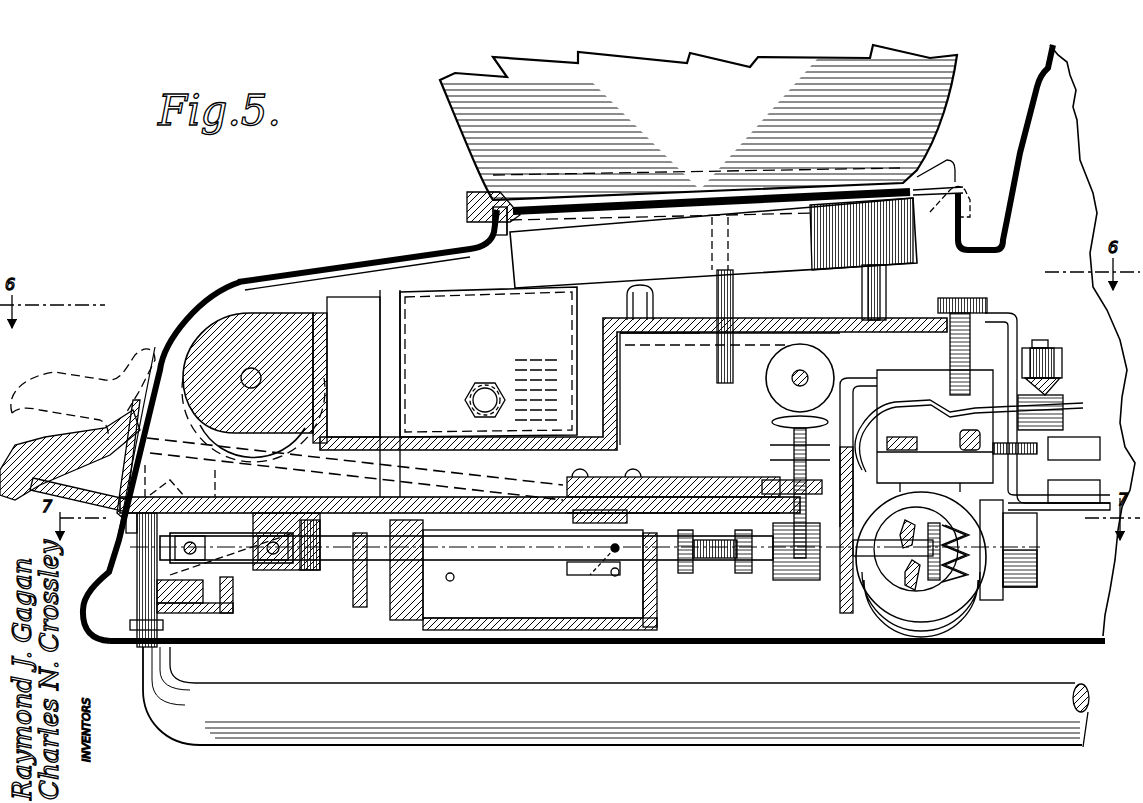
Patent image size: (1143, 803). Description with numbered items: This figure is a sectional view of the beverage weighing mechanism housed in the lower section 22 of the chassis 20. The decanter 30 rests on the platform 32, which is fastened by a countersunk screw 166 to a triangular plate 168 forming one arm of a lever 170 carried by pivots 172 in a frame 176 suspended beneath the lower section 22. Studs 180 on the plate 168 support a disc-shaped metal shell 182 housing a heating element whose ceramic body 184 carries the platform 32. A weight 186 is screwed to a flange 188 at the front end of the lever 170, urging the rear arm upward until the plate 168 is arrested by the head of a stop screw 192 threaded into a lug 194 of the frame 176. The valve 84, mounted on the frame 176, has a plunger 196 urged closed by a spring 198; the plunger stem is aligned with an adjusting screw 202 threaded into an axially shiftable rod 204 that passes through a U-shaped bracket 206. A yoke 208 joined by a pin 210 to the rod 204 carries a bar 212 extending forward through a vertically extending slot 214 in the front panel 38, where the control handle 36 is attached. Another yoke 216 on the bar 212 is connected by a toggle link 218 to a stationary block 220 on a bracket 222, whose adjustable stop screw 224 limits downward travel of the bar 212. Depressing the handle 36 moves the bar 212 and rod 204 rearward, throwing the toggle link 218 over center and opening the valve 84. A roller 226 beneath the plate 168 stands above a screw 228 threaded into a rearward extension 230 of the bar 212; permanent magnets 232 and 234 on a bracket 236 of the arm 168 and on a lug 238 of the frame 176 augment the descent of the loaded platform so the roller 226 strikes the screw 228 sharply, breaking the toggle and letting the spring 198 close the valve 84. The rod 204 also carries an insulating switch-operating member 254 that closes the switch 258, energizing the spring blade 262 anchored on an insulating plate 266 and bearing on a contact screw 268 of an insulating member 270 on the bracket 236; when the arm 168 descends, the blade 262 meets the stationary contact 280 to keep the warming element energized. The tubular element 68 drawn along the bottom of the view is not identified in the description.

The chassis 20 is at (214, 288).
The lower section 22 is at (345, 268).
The decanter 30 is at (440, 95).
The platform 32 is at (465, 196).
The control handle 36 is at (30, 445).
The front panel 38 is at (160, 345).
The tube 68 is at (633, 735).
The valve 84 is at (882, 605).
The countersunk screw 166 is at (735, 293).
The triangular plate 168 is at (682, 333).
The lever 170 is at (620, 428).
The pivots 172 is at (486, 385).
The frame 176 is at (476, 277).
The studs 180 is at (650, 298).
The disc-shaped metal shell 182 is at (713, 243).
The ceramic body 184 is at (545, 235).
The weight 186 is at (276, 310).
The flange 188 is at (338, 385).
The stop screw 192 is at (962, 300).
The horizontally extending lug 194 is at (865, 380).
The plunger 196 is at (940, 580).
The spring 198 is at (950, 590).
The adjusting screw 202 is at (708, 568).
The rod 204 is at (512, 562).
The U-shaped bracket 206 is at (440, 618).
The yoke 208 is at (640, 518).
The pin 210 is at (605, 576).
The bar 212 is at (460, 497).
The vertically extending slot 214 is at (140, 480).
The yoke 216 is at (330, 565).
The toggle link 218 is at (250, 560).
The stationary block 220 is at (180, 617).
The bracket 222 is at (240, 606).
The adjustable stop screw 224 is at (150, 685).
The roller 226 is at (770, 390).
The screw 228 is at (790, 462).
The rearward extension 230 is at (695, 476).
The permanent magnet 232 is at (1074, 448).
The permanent magnet 234 is at (1074, 491).
The bracket 236 is at (1019, 332).
The lug 238 is at (1059, 526).
The switch-operating member 254 is at (358, 610).
The switch 258 is at (1055, 338).
The spring blade 262 is at (984, 425).
The insulating plate 266 is at (980, 463).
The contact screw 268 is at (1063, 415).
The member 270 is at (1055, 368).
The stationary contact 280 is at (958, 440).